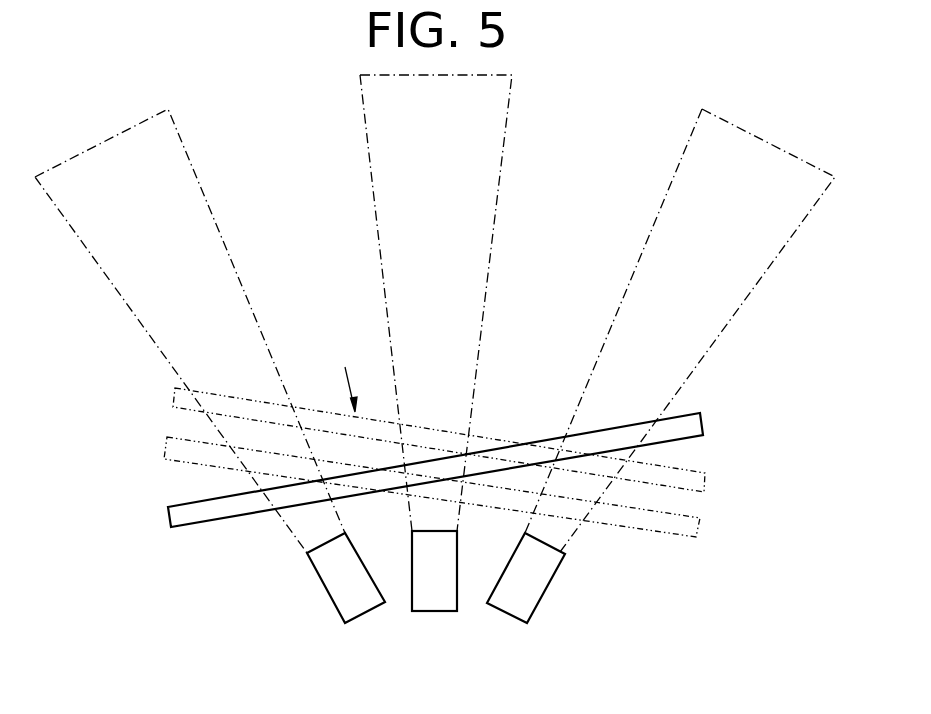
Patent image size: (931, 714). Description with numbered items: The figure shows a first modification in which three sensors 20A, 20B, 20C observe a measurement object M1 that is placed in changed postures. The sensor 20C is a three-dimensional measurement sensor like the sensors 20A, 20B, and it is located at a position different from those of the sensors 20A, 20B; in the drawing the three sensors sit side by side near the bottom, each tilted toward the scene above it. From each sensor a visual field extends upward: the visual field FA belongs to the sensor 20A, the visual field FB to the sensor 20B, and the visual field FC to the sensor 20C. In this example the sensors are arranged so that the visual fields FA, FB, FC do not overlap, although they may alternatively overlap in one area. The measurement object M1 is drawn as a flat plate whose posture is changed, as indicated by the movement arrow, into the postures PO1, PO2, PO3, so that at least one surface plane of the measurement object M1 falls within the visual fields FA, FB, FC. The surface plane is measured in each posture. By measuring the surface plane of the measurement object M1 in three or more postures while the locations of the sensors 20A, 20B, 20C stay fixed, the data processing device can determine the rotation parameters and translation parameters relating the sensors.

The visual field FA is at (253, 303).
The visual field FB is at (618, 308).
The visual field FC is at (498, 188).
The measurement object M1 is at (345, 376).
The posture PO1 is at (705, 422).
The posture PO2 is at (706, 480).
The posture PO3 is at (698, 525).
The sensor 20A is at (323, 588).
The sensor 20B is at (548, 587).
The sensor 20C is at (432, 612).